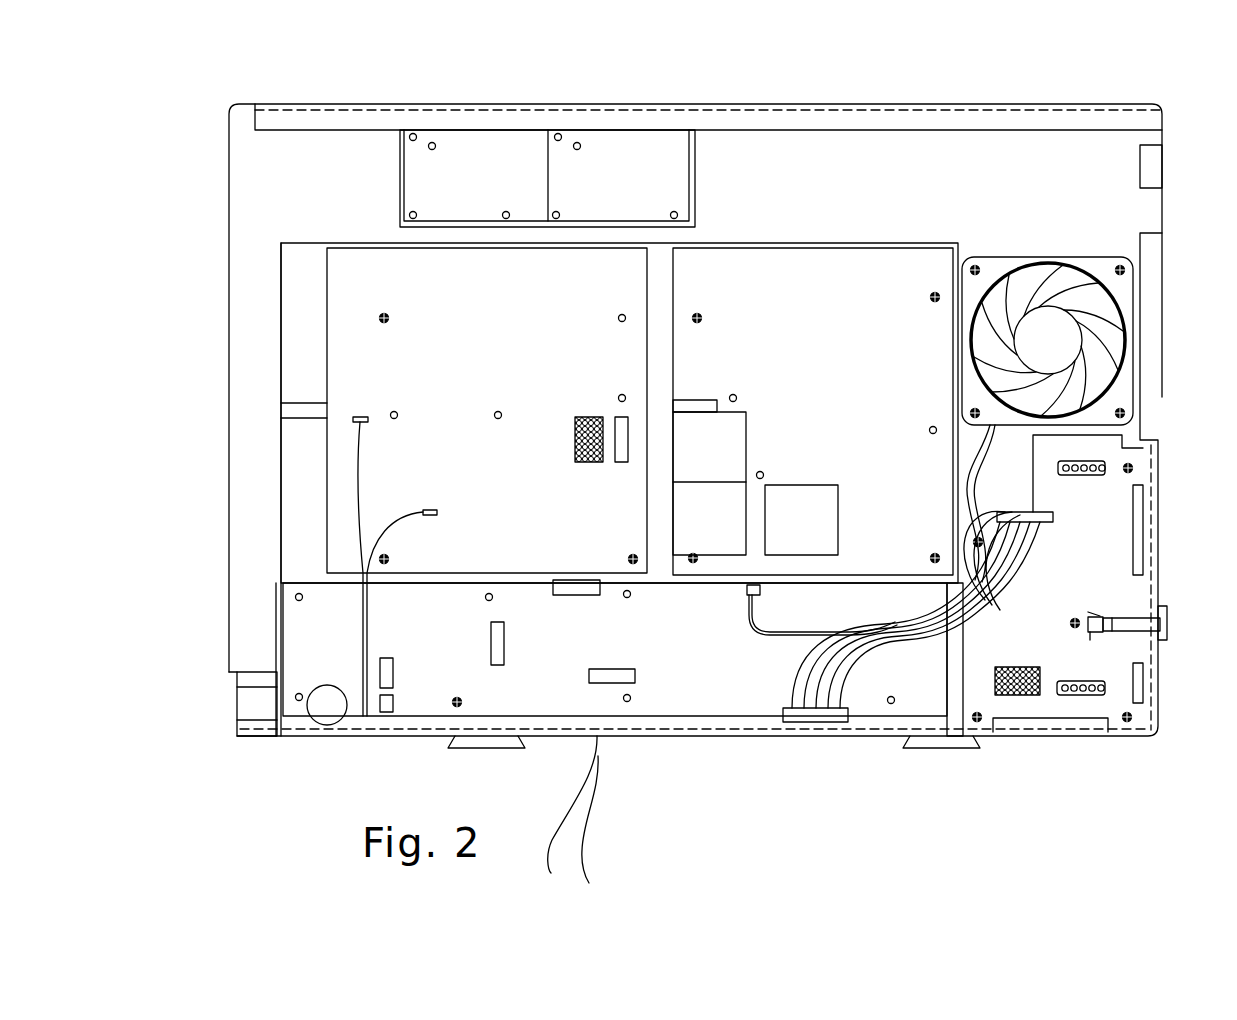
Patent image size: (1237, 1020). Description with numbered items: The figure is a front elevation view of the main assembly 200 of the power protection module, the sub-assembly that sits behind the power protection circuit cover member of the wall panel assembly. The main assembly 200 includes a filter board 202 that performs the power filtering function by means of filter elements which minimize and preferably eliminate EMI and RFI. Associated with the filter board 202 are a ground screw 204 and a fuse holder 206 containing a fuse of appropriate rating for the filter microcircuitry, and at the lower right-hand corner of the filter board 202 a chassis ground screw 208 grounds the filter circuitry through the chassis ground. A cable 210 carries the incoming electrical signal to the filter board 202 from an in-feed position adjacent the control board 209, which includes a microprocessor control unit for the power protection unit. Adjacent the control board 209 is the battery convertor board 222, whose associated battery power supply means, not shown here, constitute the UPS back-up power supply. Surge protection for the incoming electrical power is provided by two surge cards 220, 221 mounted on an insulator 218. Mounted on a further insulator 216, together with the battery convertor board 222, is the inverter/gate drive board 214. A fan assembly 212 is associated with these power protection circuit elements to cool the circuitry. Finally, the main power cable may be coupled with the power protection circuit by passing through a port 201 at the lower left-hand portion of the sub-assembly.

The main assembly 200 is at (208, 452).
The port 201 is at (255, 705).
The filter board 202 is at (1112, 493).
The ground screw 204 is at (1080, 617).
The fuse holder 206 is at (1165, 622).
The chassis ground screw 208 is at (1133, 722).
The control board 209 is at (678, 693).
The cable 210 is at (930, 640).
The fan assembly 212 is at (1103, 322).
The inverter/gate drive board 214 is at (905, 275).
The insulator 216 is at (858, 245).
The insulator 218 is at (700, 178).
The surge card 220 is at (617, 140).
The surge card 221 is at (473, 140).
The battery convertor board 222 is at (346, 310).